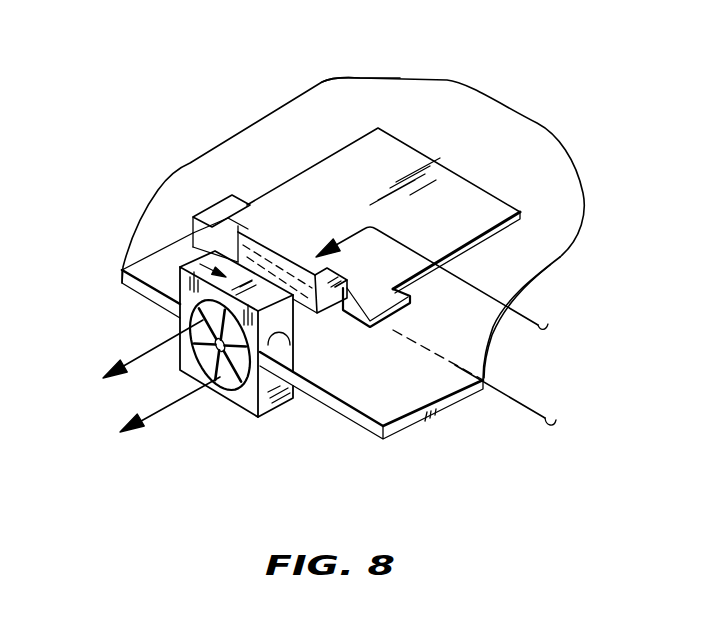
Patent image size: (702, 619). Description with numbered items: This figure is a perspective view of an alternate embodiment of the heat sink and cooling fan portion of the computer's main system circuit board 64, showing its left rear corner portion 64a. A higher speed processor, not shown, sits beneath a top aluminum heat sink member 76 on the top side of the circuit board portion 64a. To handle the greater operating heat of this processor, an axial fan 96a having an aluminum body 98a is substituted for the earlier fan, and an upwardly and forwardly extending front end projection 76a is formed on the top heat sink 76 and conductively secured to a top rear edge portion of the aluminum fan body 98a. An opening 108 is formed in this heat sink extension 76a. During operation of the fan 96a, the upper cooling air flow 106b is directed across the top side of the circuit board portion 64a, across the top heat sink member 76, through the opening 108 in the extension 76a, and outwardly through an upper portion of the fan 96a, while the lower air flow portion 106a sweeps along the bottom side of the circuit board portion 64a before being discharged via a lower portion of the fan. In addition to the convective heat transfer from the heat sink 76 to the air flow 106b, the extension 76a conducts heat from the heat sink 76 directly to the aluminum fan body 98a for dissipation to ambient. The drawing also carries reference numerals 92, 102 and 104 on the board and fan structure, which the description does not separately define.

The main system circuit board 64 is at (534, 175).
The left rear corner portion of the circuit board 64a is at (352, 90).
The top heat sink member 76 is at (397, 153).
The front end projection of the heat sink 76a is at (270, 160).
The base plate 92 is at (437, 405).
The axial fan 96a is at (191, 264).
The aluminum fan body 98a is at (243, 397).
The hole 102 is at (276, 334).
The side wall of base plate 104 is at (347, 410).
The first portion of cooling air 106a is at (166, 415).
The second portion of cooling air 106b is at (156, 348).
The opening in the heat sink extension 108 is at (268, 258).